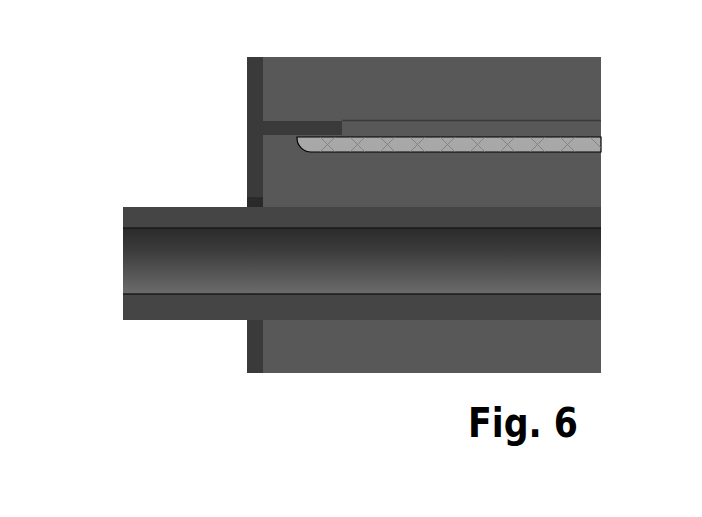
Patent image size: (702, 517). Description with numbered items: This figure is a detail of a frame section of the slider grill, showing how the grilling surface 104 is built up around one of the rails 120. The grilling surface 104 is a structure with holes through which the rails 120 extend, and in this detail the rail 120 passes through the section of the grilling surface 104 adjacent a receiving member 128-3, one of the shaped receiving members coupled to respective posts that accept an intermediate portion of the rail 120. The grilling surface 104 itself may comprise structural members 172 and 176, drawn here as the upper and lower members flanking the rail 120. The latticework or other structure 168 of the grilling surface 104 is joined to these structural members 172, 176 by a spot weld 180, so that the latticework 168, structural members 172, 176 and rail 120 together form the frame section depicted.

The grilling surface 104 is at (453, 57).
The rail 120 is at (208, 207).
The receiving member 128-3 is at (208, 0).
The latticework 168 is at (601, 144).
The structural member 172 is at (250, 58).
The structural member 176 is at (252, 375).
The spot weld 180 is at (247, 143).